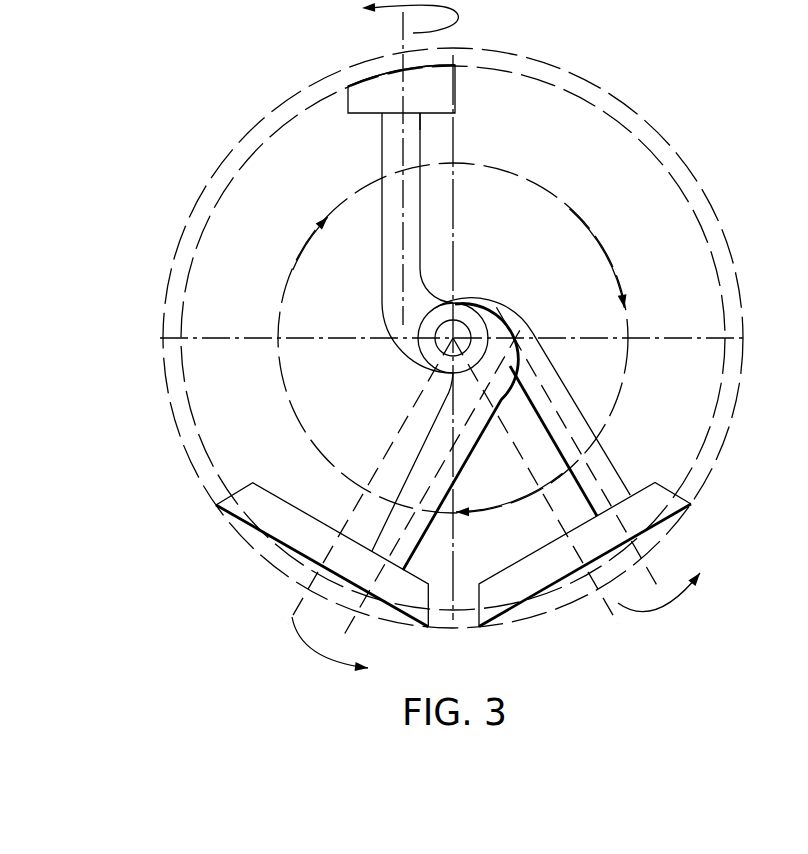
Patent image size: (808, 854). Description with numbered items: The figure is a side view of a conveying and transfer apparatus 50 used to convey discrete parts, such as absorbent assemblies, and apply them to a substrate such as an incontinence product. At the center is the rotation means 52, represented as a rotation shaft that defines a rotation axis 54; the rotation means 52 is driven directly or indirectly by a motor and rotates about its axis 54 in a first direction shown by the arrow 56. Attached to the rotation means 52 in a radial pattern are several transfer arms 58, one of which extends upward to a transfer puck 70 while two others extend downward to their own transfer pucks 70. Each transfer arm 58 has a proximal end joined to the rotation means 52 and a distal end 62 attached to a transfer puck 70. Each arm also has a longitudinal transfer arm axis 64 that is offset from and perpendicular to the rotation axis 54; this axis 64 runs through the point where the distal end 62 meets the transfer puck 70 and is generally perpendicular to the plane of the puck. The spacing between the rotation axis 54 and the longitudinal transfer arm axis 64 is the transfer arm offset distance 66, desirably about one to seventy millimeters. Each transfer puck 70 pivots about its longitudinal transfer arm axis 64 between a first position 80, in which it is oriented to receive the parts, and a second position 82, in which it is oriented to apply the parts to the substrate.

The conveying and transfer apparatus 50 is at (172, 101).
The rotation means 52 is at (437, 350).
The rotation axis 54 is at (457, 333).
The arrow 56 is at (598, 243).
The transfer arm 58 is at (382, 184).
The distal end 62 is at (422, 115).
The longitudinal transfer arm axis 64 is at (402, 308).
The transfer arm offset distance 66 is at (402, 23).
The transfer puck 70 is at (442, 86).
The first position 80 is at (297, 553).
The second position 82 is at (370, 78).